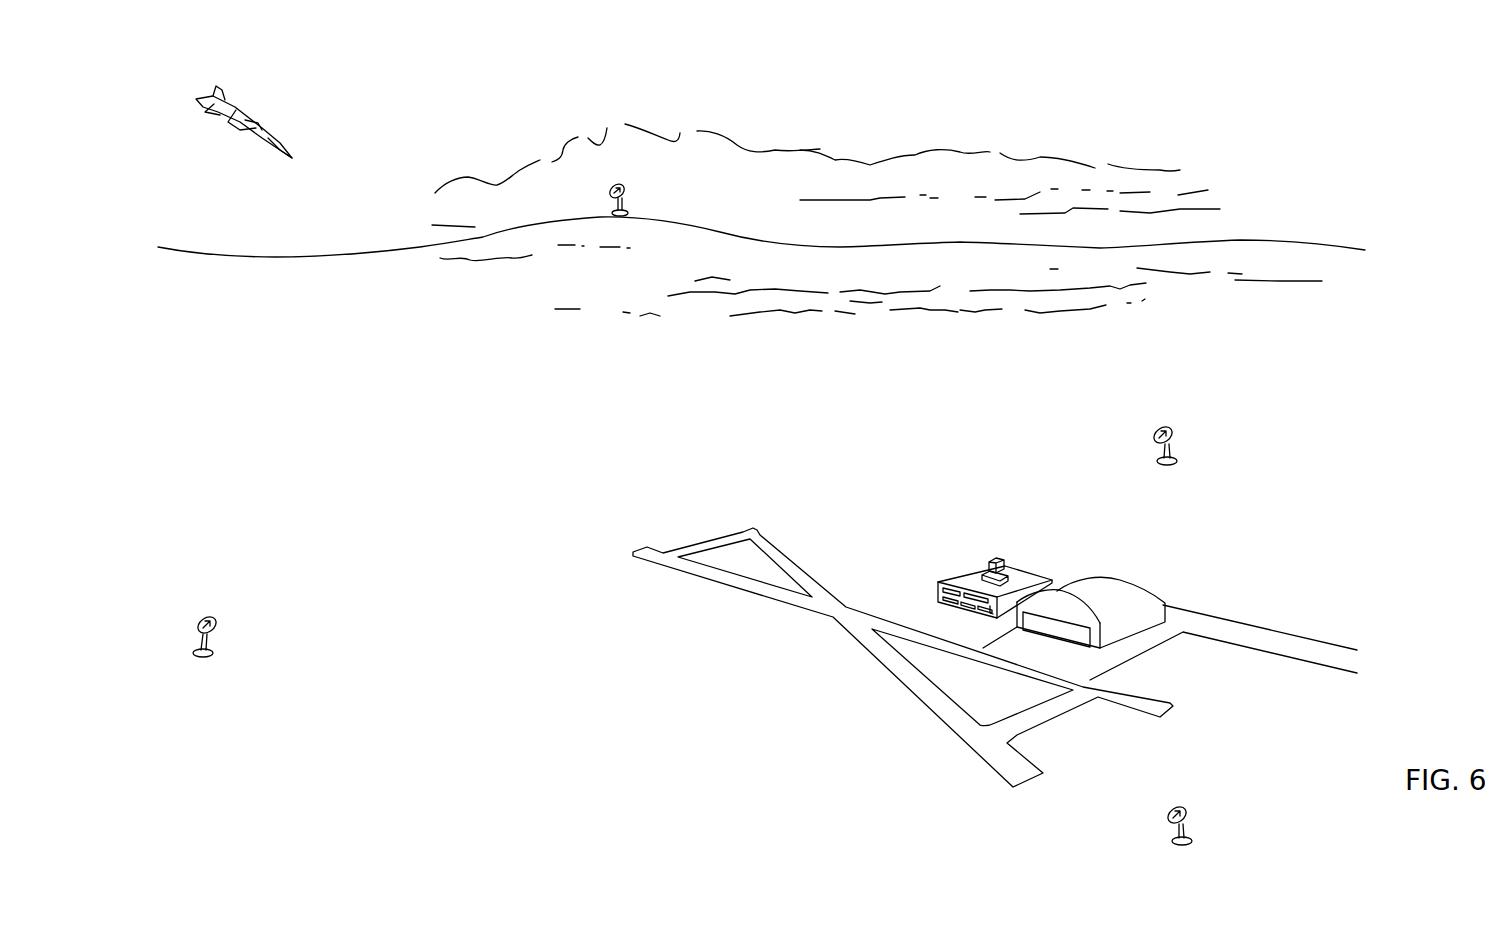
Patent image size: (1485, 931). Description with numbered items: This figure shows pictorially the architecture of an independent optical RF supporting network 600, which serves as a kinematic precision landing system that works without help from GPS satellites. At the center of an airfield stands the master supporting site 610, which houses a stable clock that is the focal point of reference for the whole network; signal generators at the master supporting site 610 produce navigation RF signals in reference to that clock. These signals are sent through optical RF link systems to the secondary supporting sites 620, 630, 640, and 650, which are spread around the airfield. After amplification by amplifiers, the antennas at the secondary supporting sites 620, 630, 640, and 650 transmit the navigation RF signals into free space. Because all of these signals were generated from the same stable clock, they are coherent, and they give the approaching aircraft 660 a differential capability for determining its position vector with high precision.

The optical RF supporting network 600 is at (1462, 741).
The master supporting site 610 is at (995, 572).
The secondary supporting site 620 is at (1207, 824).
The secondary supporting site 630 is at (1193, 445).
The secondary supporting site 640 is at (648, 200).
The secondary supporting site 650 is at (233, 636).
The aircraft 660 is at (254, 122).